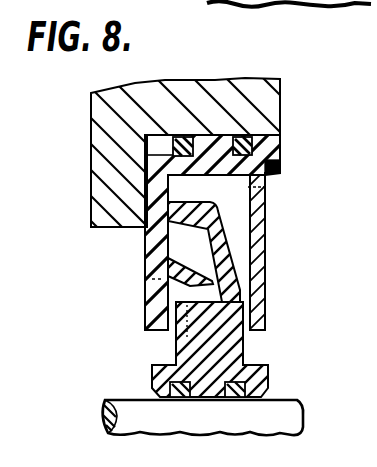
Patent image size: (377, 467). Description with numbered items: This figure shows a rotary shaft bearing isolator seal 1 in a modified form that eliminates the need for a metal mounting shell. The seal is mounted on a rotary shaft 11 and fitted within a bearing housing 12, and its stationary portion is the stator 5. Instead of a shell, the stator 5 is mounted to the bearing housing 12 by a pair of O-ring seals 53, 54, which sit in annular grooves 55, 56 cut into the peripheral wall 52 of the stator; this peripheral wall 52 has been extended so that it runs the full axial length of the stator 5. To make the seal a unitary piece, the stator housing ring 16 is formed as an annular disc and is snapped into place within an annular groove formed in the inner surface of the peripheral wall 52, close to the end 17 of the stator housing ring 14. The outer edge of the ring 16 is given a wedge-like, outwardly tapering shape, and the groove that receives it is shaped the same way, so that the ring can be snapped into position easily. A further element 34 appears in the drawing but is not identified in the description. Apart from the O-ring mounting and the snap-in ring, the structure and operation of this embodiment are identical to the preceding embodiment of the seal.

The rotary shaft bearing isolator seal 1 is at (84, 277).
The stator 5 is at (139, 293).
The rotary shaft 11 is at (273, 412).
The bearing housing 12 is at (283, 97).
The stator housing ring 14 is at (140, 247).
The stator housing ring 16 is at (268, 240).
The end of stator housing ring 17 is at (281, 164).
The lower seal block 34 is at (186, 338).
The peripheral wall 52 is at (286, 127).
The O-ring seal 53 is at (184, 147).
The O-ring seal 54 is at (244, 137).
The annular groove 55 is at (142, 177).
The annular groove 56 is at (217, 177).